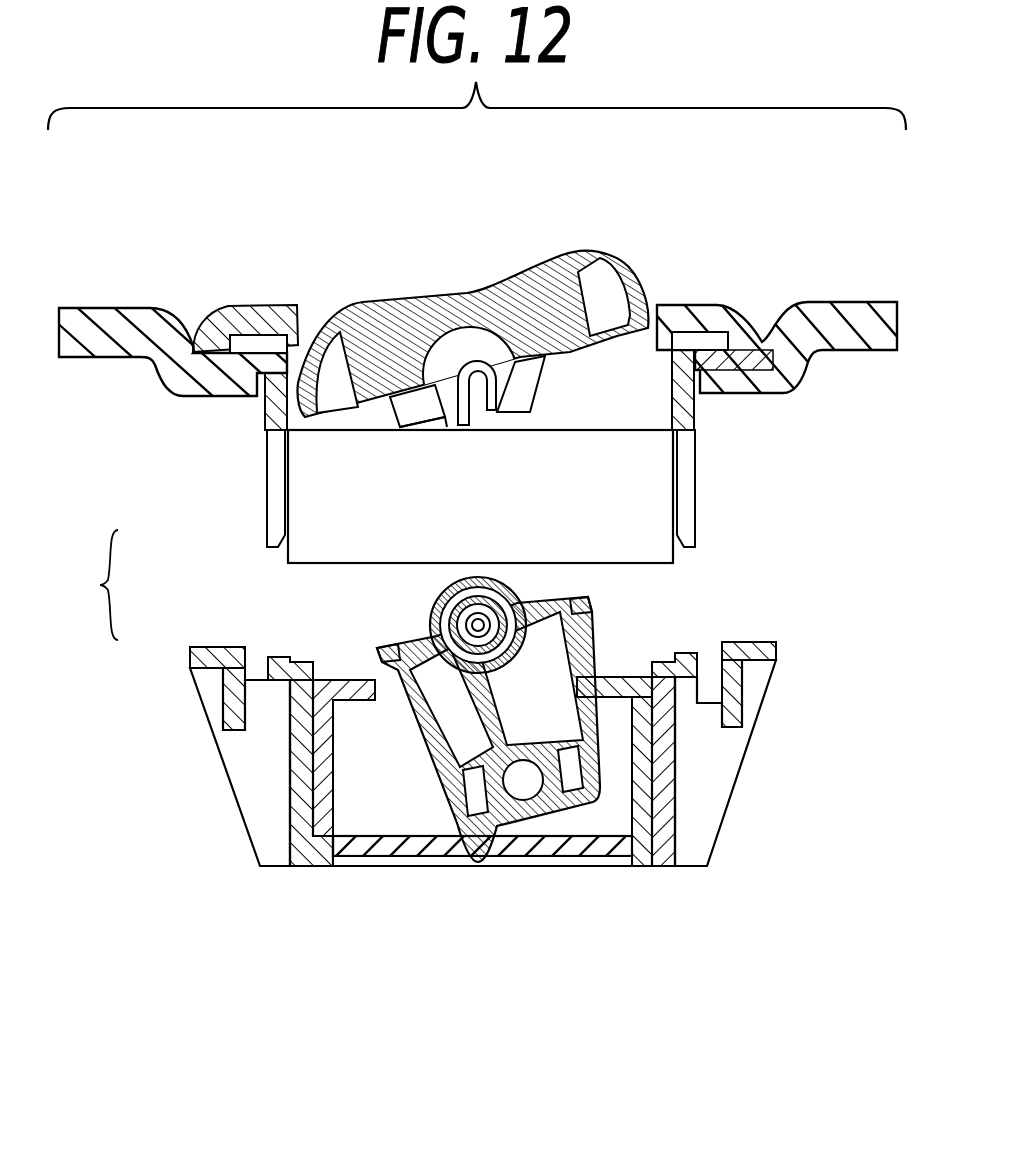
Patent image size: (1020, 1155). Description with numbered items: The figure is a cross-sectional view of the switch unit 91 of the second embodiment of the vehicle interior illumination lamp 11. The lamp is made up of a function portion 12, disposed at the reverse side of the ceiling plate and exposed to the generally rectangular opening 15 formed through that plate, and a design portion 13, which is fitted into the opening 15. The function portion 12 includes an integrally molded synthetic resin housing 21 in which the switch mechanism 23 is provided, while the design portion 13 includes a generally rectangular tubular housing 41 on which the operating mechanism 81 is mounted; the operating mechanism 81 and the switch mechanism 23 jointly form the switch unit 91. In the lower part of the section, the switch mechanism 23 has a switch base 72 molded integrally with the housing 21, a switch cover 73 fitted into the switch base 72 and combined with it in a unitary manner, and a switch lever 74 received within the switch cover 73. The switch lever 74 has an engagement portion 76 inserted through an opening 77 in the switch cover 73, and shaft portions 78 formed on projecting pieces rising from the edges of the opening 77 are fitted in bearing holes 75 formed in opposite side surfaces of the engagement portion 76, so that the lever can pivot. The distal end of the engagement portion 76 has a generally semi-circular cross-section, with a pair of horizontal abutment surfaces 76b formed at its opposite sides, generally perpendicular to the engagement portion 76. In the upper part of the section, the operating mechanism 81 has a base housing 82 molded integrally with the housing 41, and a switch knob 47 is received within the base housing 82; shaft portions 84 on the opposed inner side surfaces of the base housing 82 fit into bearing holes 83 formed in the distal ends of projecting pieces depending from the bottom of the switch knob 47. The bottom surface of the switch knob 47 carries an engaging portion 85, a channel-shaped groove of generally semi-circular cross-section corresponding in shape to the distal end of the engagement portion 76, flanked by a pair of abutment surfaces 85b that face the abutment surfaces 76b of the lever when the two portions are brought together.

The vehicle interior illumination lamp 11 is at (765, 262).
The function portion 12 is at (247, 836).
The design portion 13 is at (240, 282).
The opening 15 is at (699, 395).
The housing 21 is at (665, 867).
The switch mechanism 23 is at (287, 729).
The housing 41 is at (698, 520).
The switch knob 47 is at (400, 300).
The switch base 72 is at (675, 808).
The switch cover 73 is at (677, 745).
The switch lever 74 is at (449, 812).
The bearing holes 75 is at (516, 654).
The engagement portion 76 is at (455, 578).
The abutment surfaces 76b is at (398, 645).
The opening 77 is at (583, 680).
The shaft portions 78 is at (425, 712).
The operating mechanism 81 is at (264, 497).
The base housing 82 is at (697, 477).
The bearing holes 83 is at (492, 418).
The shaft portions 84 is at (477, 328).
The engaging portion 85 is at (452, 300).
The abutment surfaces 85b is at (413, 397).
The switch unit 91 is at (477, 361).